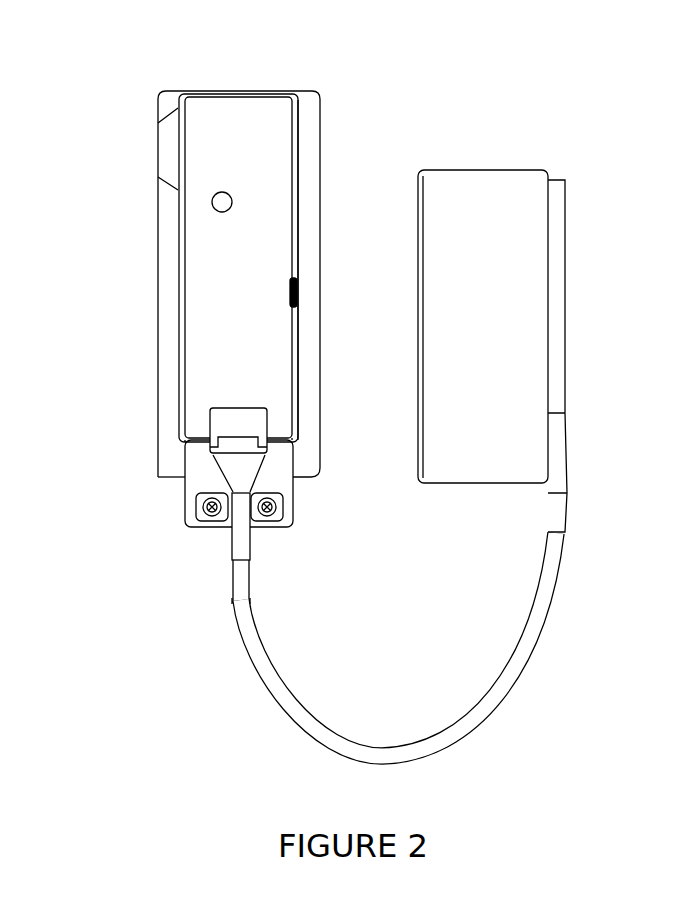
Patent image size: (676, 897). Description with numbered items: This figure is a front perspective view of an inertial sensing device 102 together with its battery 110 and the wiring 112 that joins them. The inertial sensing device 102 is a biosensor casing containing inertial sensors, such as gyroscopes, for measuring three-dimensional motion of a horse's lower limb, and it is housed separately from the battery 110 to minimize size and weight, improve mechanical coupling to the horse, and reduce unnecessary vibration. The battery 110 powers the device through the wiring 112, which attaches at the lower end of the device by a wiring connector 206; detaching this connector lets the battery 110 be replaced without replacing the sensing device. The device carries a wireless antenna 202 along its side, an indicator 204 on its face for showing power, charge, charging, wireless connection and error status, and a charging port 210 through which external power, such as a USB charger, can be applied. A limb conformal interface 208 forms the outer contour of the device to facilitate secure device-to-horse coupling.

The inertial sensing device 102 is at (210, 103).
The battery 110 is at (457, 185).
The wiring 112 is at (244, 610).
The wireless antenna 202 is at (167, 130).
The indicator 204 is at (226, 197).
The wiring connector 206 is at (232, 465).
The limb conformal interface 208 is at (307, 126).
The charging port 210 is at (298, 286).